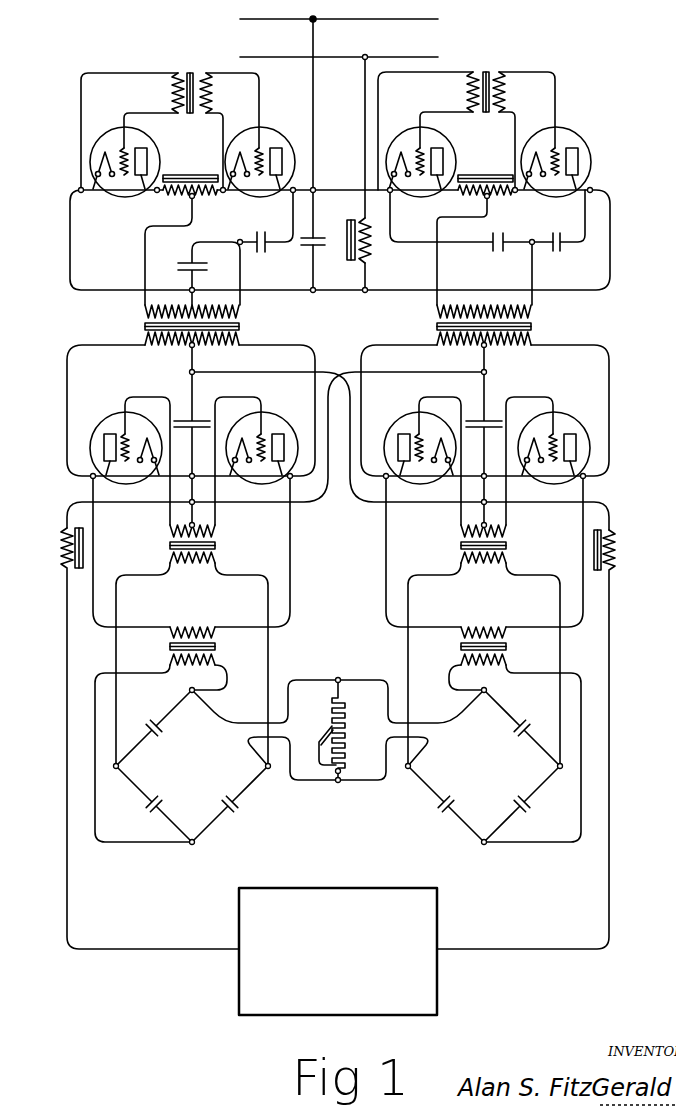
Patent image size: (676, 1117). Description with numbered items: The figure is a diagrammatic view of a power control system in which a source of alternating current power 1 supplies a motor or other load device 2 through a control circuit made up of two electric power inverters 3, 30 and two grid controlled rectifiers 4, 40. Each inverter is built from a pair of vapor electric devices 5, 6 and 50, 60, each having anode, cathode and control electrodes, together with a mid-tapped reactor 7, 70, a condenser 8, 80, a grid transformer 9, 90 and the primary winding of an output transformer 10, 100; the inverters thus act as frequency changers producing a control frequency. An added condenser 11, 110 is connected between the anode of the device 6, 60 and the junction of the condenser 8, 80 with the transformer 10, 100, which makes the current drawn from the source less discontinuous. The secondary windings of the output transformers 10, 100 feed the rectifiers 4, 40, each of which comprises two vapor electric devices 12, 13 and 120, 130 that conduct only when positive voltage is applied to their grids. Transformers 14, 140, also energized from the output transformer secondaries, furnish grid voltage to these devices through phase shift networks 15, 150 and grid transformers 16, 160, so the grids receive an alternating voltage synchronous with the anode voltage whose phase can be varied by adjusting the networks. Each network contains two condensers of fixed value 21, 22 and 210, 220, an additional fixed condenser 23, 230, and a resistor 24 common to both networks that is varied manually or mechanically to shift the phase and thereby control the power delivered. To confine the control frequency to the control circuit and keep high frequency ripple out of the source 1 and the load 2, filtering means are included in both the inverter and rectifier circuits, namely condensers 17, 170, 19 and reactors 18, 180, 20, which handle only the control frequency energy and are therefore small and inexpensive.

The source of alternating current power 1 is at (332, 153).
The motor or other load device 2 is at (338, 951).
The electric power inverter 3 is at (40, 142).
The grid controlled rectifier 4 is at (38, 419).
The vapor electric device 5 is at (125, 155).
The vapor electric device 6 is at (260, 155).
The mid-tapped reactor 7 is at (181, 230).
The condenser 8 is at (209, 273).
The grid transformer 9 is at (191, 131).
The output transformer 10 is at (205, 325).
The condenser 11 is at (266, 232).
The vapor electric device 12 is at (123, 461).
The vapor electric device 13 is at (257, 461).
The transformer 14 is at (191, 659).
The phase shift network 15 is at (227, 761).
The grid transformer 16 is at (192, 645).
The condenser 17 is at (186, 411).
The reactor 18 is at (150, 738).
The condenser 19 is at (305, 254).
The reactor 20 is at (374, 240).
The condenser of fixed value 21 is at (154, 728).
The condenser of fixed value 22 is at (154, 804).
The additional condenser 23 is at (177, 781).
The resistor 24 is at (343, 730).
The electric power inverter 30 is at (652, 143).
The grid controlled rectifier 40 is at (657, 420).
The vapor electric device 50 is at (421, 154).
The vapor electric device 60 is at (556, 154).
The mid-tapped reactor 70 is at (475, 230).
The condenser 80 is at (471, 247).
The grid transformer 90 is at (487, 131).
The output transformer 100 is at (464, 325).
The condenser 110 is at (563, 233).
The vapor electric device 120 is at (415, 461).
The vapor electric device 130 is at (552, 461).
The transformer 140 is at (484, 659).
The phase shift network 150 is at (452, 761).
The grid transformer 160 is at (484, 645).
The condenser 170 is at (490, 412).
The reactor 180 is at (526, 739).
The condenser of fixed value 210 is at (521, 728).
The condenser of fixed value 220 is at (470, 781).
The additional condenser 230 is at (444, 804).